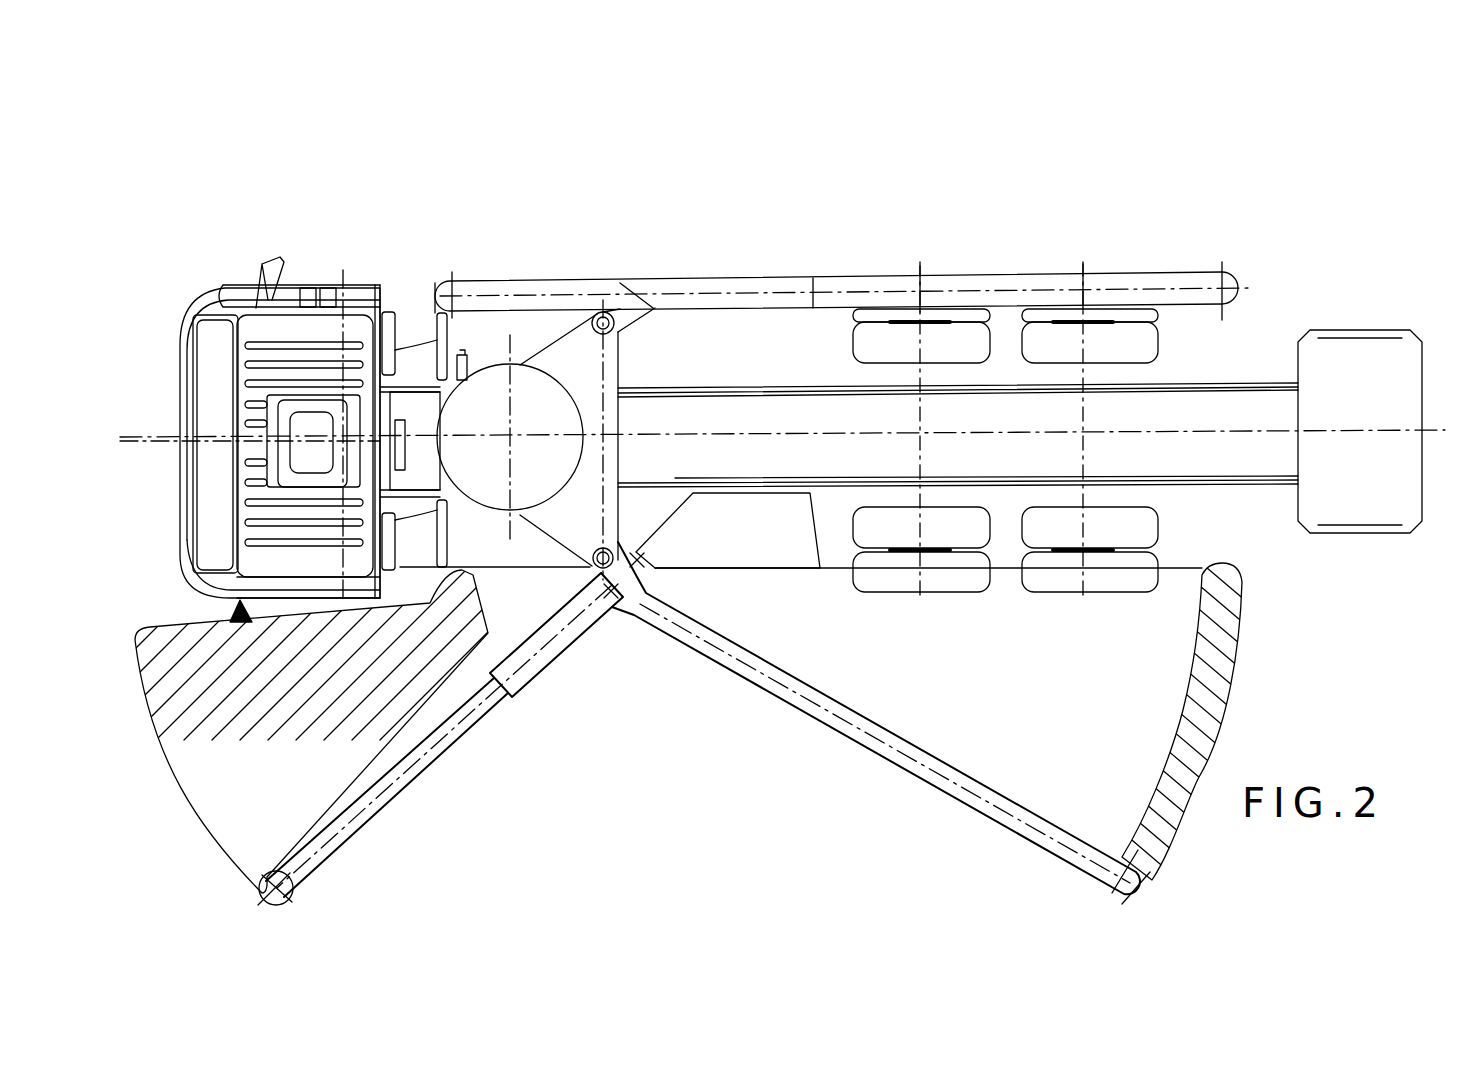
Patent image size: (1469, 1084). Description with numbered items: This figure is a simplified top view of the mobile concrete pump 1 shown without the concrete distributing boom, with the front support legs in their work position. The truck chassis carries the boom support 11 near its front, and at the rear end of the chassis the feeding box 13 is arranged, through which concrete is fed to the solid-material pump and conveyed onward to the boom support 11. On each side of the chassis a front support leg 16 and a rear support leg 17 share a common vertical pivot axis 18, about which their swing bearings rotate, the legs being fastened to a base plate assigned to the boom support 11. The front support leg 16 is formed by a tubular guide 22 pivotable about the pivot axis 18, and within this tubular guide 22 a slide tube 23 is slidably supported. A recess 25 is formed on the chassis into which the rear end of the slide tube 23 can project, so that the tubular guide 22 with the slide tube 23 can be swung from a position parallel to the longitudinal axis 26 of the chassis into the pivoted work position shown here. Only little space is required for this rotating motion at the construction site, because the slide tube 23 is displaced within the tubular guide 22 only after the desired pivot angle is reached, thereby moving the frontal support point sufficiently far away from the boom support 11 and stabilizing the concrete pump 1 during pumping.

The mobile concrete pump 1 is at (794, 266).
The boom support 11 is at (460, 420).
The feeding box 13 is at (1380, 378).
The front support leg 16 is at (528, 295).
The rear support leg 17 is at (970, 298).
The pivot axis 18 is at (607, 317).
The tubular guide 22 is at (590, 627).
The slide tube 23 is at (482, 718).
The recess 25 is at (778, 528).
The longitudinal axis 26 is at (150, 440).